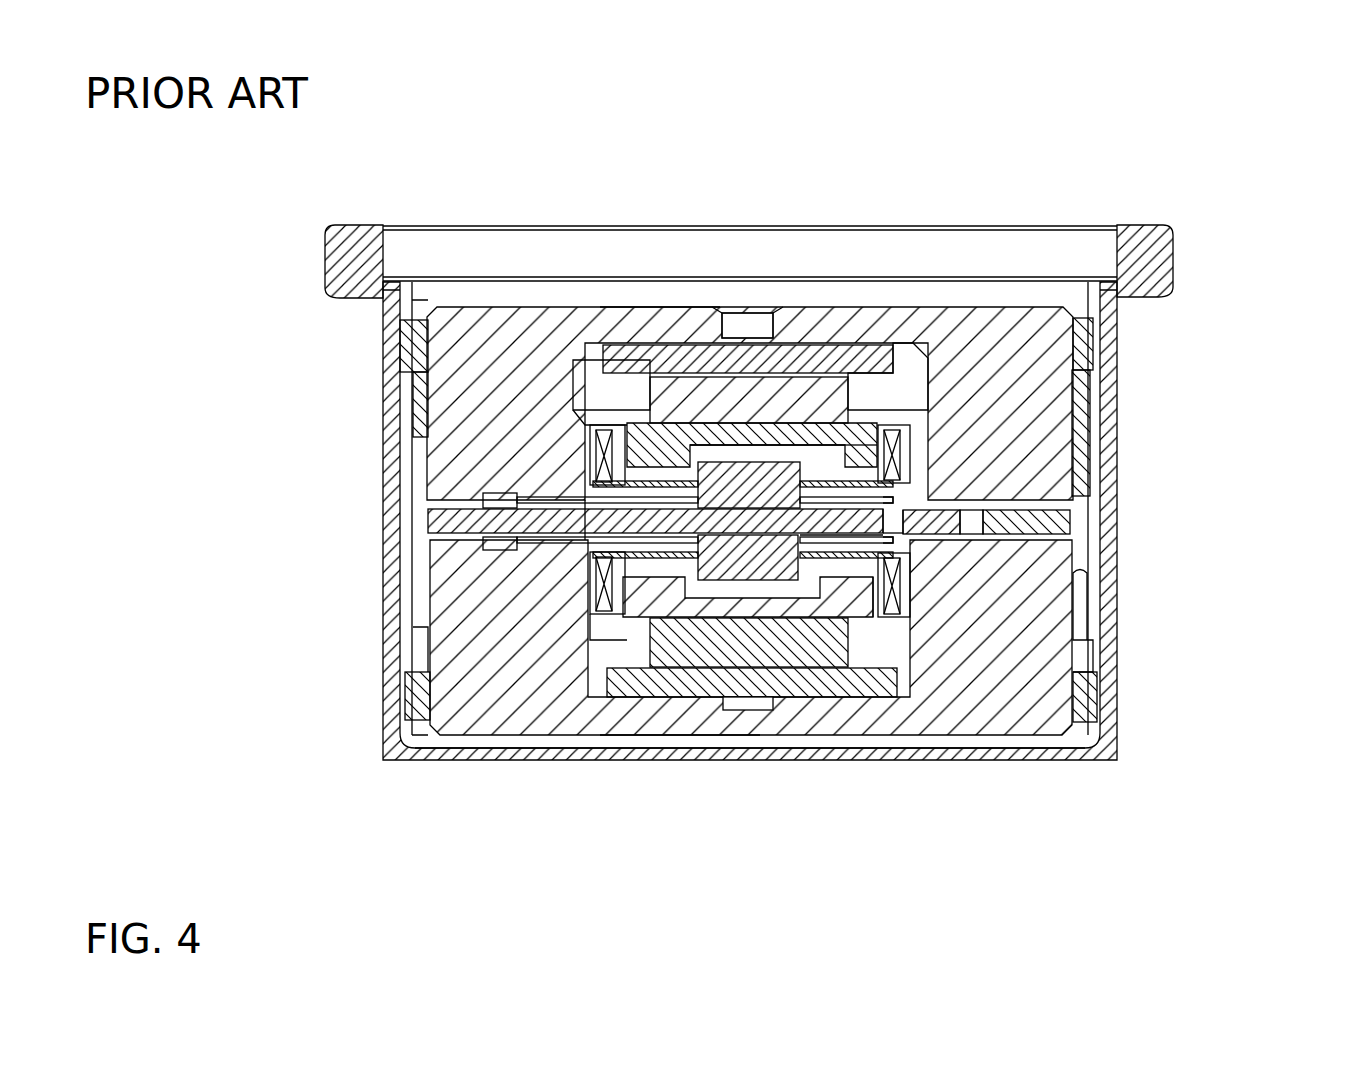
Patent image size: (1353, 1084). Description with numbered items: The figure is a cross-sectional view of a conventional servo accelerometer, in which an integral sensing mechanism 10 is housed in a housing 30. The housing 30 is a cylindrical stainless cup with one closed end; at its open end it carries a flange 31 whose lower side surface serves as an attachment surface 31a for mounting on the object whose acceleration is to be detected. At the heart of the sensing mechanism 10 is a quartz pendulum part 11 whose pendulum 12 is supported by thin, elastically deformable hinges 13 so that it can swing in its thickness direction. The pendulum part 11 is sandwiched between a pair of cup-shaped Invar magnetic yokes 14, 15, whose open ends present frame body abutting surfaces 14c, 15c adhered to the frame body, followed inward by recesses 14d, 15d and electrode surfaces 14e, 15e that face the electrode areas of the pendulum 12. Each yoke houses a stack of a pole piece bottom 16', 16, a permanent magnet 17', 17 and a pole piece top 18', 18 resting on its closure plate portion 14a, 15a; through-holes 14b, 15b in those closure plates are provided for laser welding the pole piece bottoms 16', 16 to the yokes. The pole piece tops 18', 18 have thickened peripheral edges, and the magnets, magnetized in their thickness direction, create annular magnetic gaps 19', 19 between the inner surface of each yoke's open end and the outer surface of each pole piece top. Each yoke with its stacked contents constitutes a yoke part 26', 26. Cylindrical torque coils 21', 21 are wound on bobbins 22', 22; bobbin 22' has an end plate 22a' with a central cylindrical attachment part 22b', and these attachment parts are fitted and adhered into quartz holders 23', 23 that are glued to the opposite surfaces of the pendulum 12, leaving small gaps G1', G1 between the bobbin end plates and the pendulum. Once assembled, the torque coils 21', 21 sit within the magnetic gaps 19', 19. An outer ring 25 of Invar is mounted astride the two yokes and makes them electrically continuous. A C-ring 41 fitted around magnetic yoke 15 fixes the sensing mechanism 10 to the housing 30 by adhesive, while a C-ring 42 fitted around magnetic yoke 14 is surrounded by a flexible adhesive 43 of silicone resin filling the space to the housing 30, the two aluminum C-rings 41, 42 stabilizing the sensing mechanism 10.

The sensing mechanism 10 is at (708, 295).
The pendulum part 11 is at (1072, 522).
The pendulum 12 is at (860, 540).
The hinges 13 is at (1030, 510).
The magnetic yoke 14 is at (1040, 302).
The closure plate portion 14a is at (660, 305).
The through-hole 14b is at (760, 323).
The frame body abutting surface 14c is at (470, 517).
The recess 14d is at (487, 503).
The electrode surface 14e is at (515, 490).
The magnetic yoke 15 is at (985, 735).
The closure plate portion 15a is at (675, 735).
The through-hole 15b is at (760, 690).
The frame body abutting surface 15c is at (500, 547).
The recess 15d is at (490, 545).
The electrode surface 15e is at (520, 562).
The pole piece bottom 16 is at (695, 730).
The pole piece bottom 16' is at (728, 261).
The permanent magnet 17 is at (743, 710).
The permanent magnet 17' is at (711, 286).
The pole piece top 18 is at (546, 728).
The pole piece top 18' is at (524, 287).
The annular magnetic gap 19 is at (919, 605).
The annular magnetic gap 19' is at (920, 429).
The torque coil 21 is at (1064, 576).
The torque coil 21' is at (1065, 460).
The bobbin 22 is at (1060, 640).
The bobbin 22' is at (939, 402).
The end plate 22a' is at (944, 297).
The attachment part 22b' is at (819, 299).
The holder 23 is at (773, 689).
The holder 23' is at (783, 328).
The outer ring 25 is at (545, 600).
The yoke part 26 is at (767, 795).
The yoke part 26' is at (831, 242).
The housing 30 is at (1117, 722).
The flange 31 is at (325, 258).
The attachment surface 31a is at (383, 300).
The C-ring 41 is at (410, 720).
The C-ring 42 is at (410, 320).
The flexible adhesive 43 is at (383, 384).
The small gap G1 is at (1109, 573).
The small gap G1' is at (1111, 486).